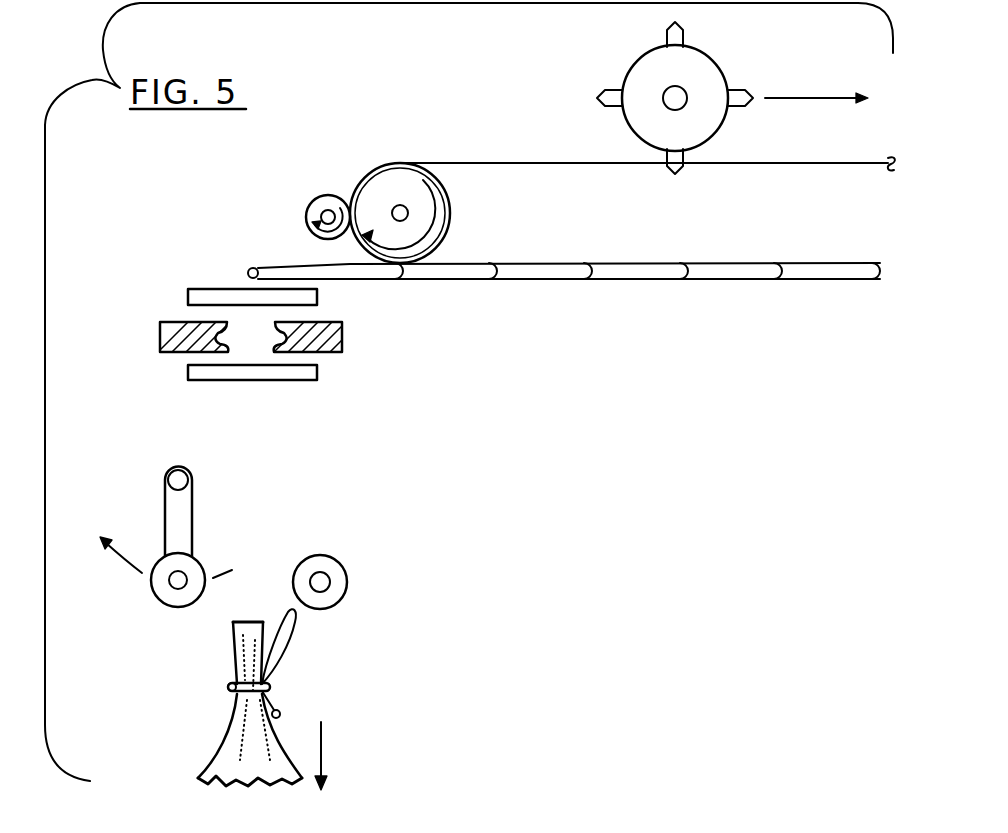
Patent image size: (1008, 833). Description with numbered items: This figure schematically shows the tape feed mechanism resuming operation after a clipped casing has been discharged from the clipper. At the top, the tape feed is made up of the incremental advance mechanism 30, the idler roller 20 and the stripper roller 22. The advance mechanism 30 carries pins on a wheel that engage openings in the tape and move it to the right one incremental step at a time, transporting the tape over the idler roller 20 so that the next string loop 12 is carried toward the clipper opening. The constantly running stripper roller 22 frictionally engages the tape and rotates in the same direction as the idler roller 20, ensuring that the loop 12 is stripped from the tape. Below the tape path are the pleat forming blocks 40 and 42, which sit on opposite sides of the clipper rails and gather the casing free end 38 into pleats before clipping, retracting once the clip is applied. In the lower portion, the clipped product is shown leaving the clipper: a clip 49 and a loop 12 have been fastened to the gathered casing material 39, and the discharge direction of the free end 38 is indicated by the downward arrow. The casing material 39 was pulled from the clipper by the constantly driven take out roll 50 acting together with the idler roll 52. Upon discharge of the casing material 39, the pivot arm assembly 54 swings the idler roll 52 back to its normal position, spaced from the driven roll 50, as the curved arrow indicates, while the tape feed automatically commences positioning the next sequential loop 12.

The string loop 12 is at (295, 630).
The idler roller 20 is at (437, 215).
The stripper roller 22 is at (313, 207).
The advance mechanism 30 is at (665, 55).
The free end 38 is at (275, 735).
The casing material 39 is at (240, 765).
The pleat forming block 40 is at (298, 372).
The pleat forming block 42 is at (218, 292).
The clip 49 is at (270, 682).
The take out roll 50 is at (335, 570).
The idler roll 52 is at (168, 594).
The pivot arm assembly 54 is at (192, 515).